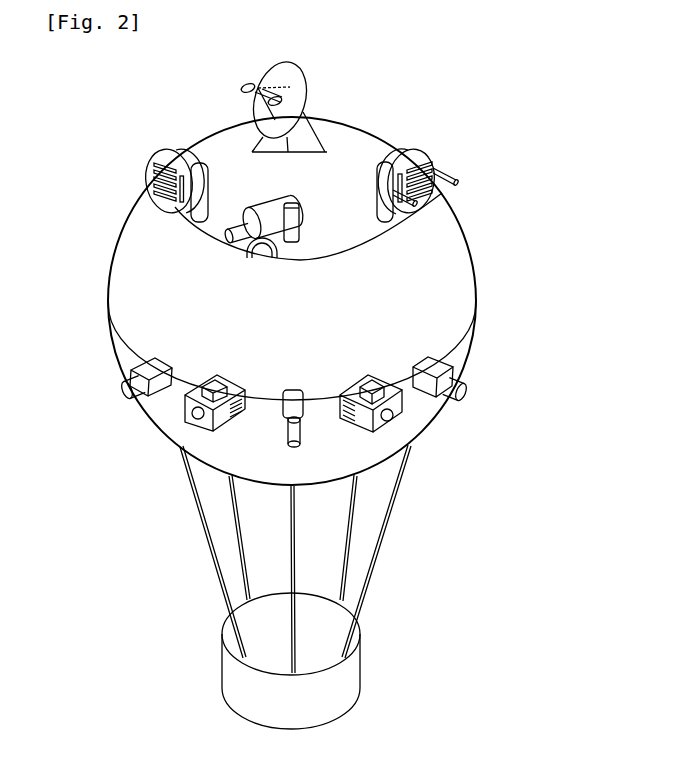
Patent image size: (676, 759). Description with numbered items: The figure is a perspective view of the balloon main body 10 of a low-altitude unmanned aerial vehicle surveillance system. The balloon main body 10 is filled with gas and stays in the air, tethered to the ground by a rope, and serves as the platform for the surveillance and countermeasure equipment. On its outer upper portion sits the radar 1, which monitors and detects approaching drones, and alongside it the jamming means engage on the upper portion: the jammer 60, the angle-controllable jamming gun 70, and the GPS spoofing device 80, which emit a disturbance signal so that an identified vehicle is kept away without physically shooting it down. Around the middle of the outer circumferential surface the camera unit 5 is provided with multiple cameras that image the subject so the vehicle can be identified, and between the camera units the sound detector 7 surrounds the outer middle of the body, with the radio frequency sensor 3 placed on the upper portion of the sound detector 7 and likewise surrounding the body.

The radar 1 is at (298, 97).
The radio frequency sensor 3 is at (377, 393).
The camera unit 5 is at (468, 393).
The sound detector 7 is at (411, 436).
The balloon main body 10 is at (440, 272).
The jammer 60 is at (152, 167).
The jamming gun 70 is at (236, 233).
The GPS spoofing device 80 is at (425, 159).